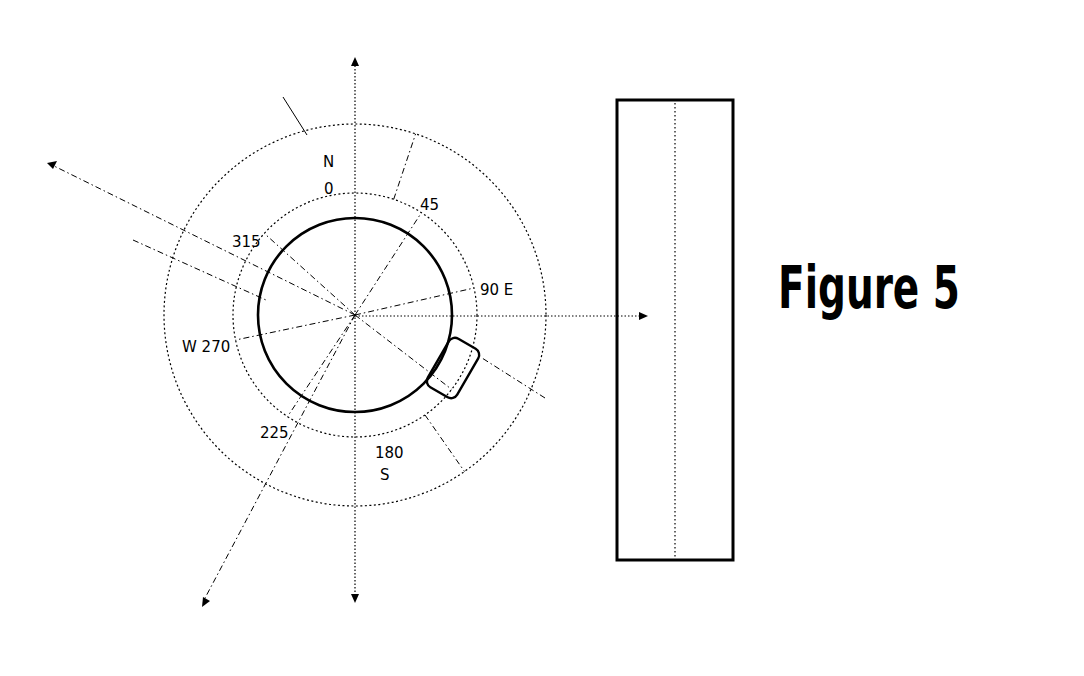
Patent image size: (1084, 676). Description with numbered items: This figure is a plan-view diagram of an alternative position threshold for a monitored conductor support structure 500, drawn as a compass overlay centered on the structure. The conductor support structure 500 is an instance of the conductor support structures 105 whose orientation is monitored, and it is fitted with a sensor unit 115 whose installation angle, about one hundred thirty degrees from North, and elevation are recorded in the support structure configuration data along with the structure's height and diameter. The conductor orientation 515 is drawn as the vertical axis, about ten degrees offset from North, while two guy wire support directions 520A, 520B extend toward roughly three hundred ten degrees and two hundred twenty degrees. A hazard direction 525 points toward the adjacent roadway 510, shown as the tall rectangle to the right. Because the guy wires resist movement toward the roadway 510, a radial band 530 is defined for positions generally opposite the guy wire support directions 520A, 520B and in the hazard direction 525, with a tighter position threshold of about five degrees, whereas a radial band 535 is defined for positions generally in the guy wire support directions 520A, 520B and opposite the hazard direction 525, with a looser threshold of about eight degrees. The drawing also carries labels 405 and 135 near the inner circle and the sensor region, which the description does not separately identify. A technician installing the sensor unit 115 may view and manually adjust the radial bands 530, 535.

The conductor support structure 105 is at (287, 106).
The sensor unit 115 is at (527, 390).
The camera 135 is at (456, 369).
The device body 405 is at (436, 292).
The conductor support structure 500 is at (186, 260).
The roadway 510 is at (722, 133).
The conductor orientation 515 is at (357, 90).
The guy wire support direction 520A is at (88, 182).
The guy wire support direction 520B is at (216, 556).
The hazard direction 525 is at (573, 320).
The radial band 530 is at (211, 195).
The radial band 535 is at (490, 193).